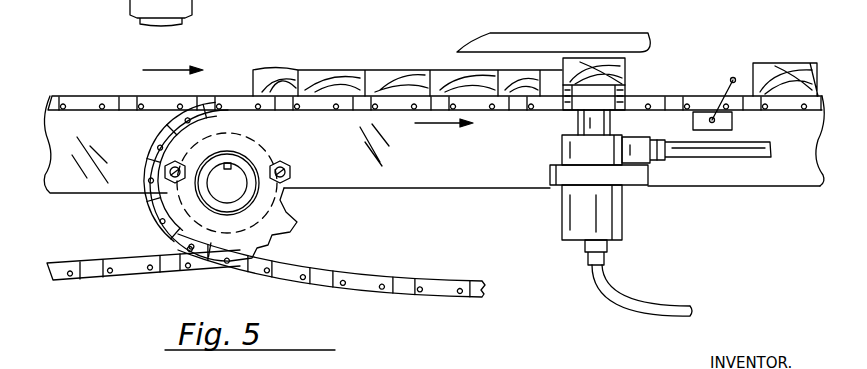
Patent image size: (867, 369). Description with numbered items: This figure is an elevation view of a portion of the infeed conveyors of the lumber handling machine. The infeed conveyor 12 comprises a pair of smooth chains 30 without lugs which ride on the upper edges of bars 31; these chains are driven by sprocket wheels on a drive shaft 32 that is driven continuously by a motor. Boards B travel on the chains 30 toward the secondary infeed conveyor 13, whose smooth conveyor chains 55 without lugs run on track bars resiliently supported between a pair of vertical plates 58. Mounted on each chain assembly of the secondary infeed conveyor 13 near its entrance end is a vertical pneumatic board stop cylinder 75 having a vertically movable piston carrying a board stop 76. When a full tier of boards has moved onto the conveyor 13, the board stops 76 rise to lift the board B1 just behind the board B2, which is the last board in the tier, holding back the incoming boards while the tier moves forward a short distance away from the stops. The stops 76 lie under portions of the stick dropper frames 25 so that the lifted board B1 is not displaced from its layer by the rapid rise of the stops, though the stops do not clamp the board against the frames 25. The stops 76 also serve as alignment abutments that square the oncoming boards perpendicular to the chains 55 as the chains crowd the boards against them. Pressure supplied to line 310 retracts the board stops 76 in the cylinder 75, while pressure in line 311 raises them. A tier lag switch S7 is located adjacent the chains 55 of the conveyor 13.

The infeed conveyor 12 is at (120, 80).
The secondary infeed conveyor 13 is at (405, 53).
The stick dropper frame 25 is at (492, 45).
The smooth chain 30 is at (88, 95).
The bar 31 is at (110, 193).
The drive shaft 32 is at (233, 178).
The smooth conveyor chain 55 is at (317, 109).
The vertical plate 58 is at (340, 176).
The pneumatic board stop cylinder 75 is at (625, 217).
The board stop 76 is at (628, 98).
The line 310 is at (745, 165).
The line 311 is at (673, 300).
The board B is at (383, 68).
The board B1 is at (630, 64).
The board B2 is at (785, 63).
The tier lag switch S7 is at (735, 120).